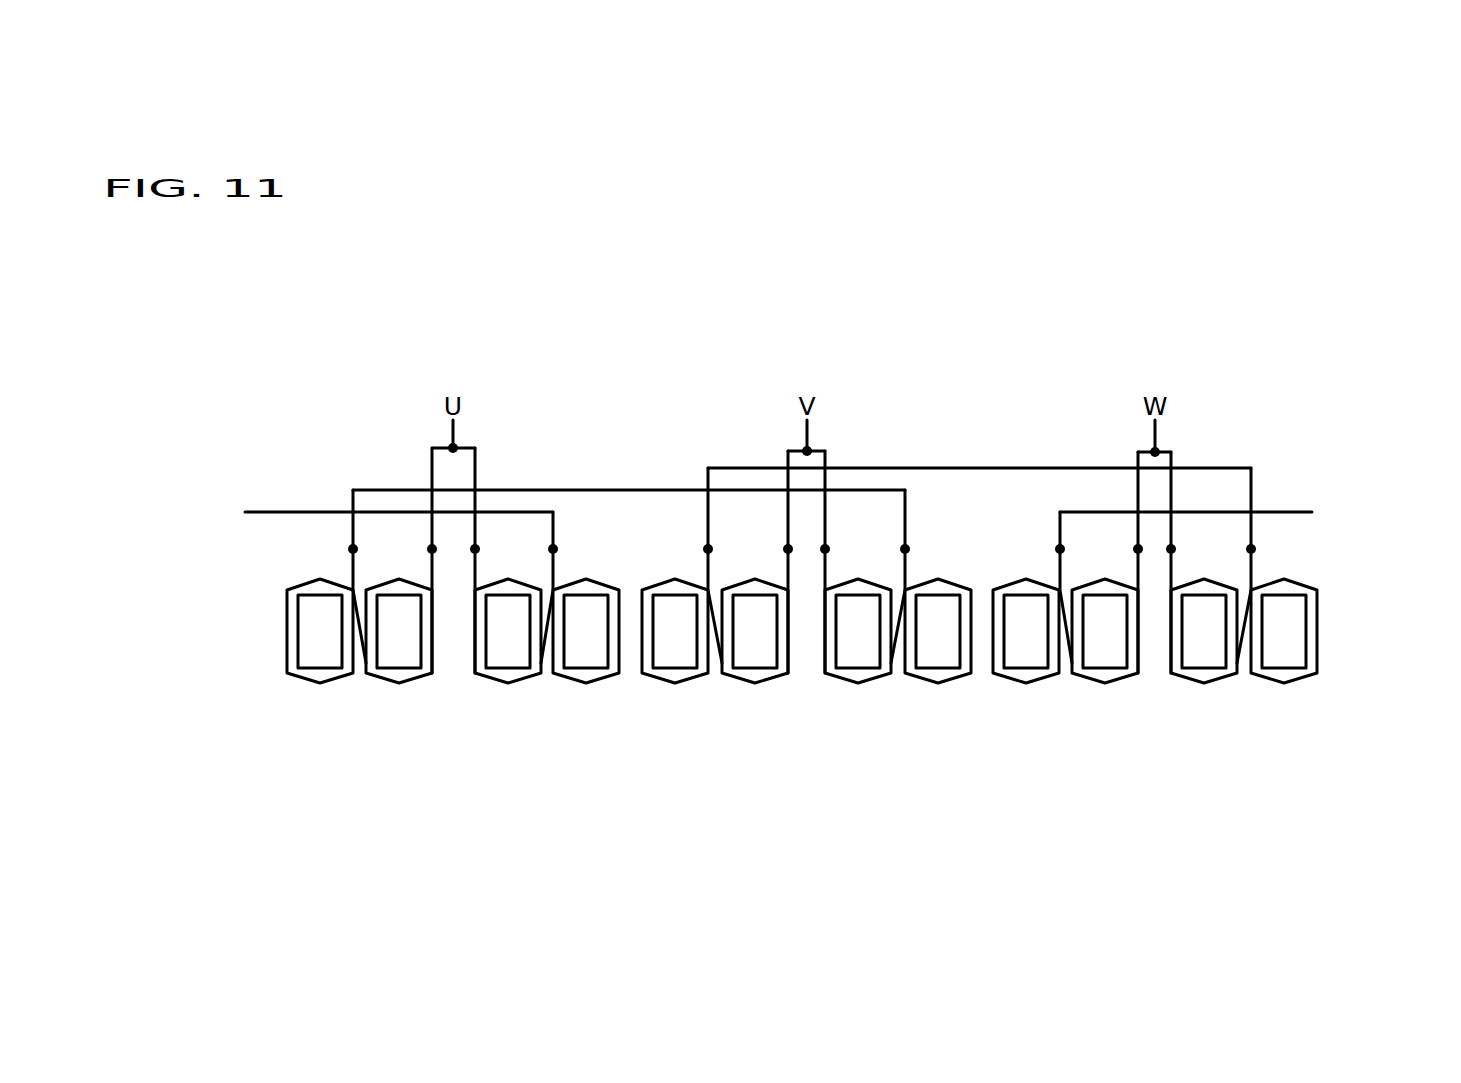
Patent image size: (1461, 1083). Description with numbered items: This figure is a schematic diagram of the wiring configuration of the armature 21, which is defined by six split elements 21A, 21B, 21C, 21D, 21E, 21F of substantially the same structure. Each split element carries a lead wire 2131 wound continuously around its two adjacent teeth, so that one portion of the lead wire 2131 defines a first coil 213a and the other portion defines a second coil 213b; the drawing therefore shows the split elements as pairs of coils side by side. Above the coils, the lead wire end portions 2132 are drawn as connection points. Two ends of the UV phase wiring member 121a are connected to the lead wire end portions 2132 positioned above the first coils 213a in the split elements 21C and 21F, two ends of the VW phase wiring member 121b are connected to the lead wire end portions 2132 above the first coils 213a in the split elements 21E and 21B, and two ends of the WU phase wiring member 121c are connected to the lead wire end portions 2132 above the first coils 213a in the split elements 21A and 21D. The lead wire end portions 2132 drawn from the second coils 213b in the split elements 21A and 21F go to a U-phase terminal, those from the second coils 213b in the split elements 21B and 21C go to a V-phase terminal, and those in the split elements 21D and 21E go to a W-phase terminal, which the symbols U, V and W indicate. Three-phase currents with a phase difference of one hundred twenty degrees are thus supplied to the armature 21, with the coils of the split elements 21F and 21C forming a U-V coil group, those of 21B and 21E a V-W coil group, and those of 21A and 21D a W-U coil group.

The armature 21 is at (1248, 343).
The UV phase wiring member 121a is at (400, 490).
The VW phase wiring member 121b is at (977, 468).
The WU phase wiring member 121c is at (1298, 512).
The lead wire 2131 is at (287, 628).
The lead wire end portion 2132 is at (353, 549).
The first coil 213a is at (303, 707).
The second coil 213b is at (392, 712).
The split element 21A is at (539, 795).
The split element 21B is at (714, 795).
The split element 21C is at (896, 805).
The split element 21D is at (1068, 807).
The split element 21E is at (1245, 795).
The split element 21F is at (326, 786).